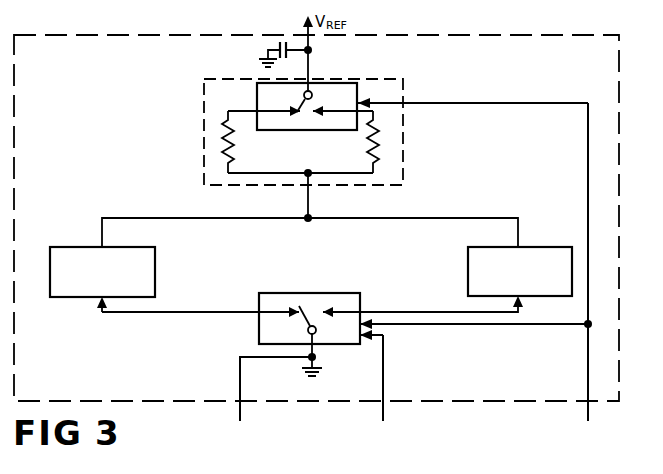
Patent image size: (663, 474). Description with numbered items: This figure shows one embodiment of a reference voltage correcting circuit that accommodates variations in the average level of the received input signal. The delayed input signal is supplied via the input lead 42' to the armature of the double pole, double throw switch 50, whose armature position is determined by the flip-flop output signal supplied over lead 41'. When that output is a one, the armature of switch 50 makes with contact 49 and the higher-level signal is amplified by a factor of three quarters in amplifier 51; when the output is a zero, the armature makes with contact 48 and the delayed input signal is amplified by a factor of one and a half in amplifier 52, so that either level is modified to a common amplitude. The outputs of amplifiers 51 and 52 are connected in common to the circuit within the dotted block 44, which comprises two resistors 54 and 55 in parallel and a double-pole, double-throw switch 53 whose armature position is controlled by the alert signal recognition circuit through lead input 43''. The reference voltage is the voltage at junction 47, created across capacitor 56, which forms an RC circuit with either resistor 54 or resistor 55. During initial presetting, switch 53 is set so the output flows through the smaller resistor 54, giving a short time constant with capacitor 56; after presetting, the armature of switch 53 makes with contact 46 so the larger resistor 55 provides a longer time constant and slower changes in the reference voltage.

The lead 41' is at (397, 381).
The input lead 42' is at (262, 392).
The lead input 43'' is at (586, 265).
The dotted block 44 is at (405, 166).
The contact 46 is at (363, 110).
The junction 47 is at (312, 50).
The contact 48 is at (347, 311).
The contact 49 is at (284, 310).
The double pole, double throw switch 50 is at (331, 293).
The amplifier 51 is at (157, 263).
The amplifier 52 is at (531, 247).
The double-pole, double-throw switch 53 is at (341, 81).
The resistor 54 is at (235, 146).
The resistor 55 is at (366, 152).
The capacitor 56 is at (279, 45).